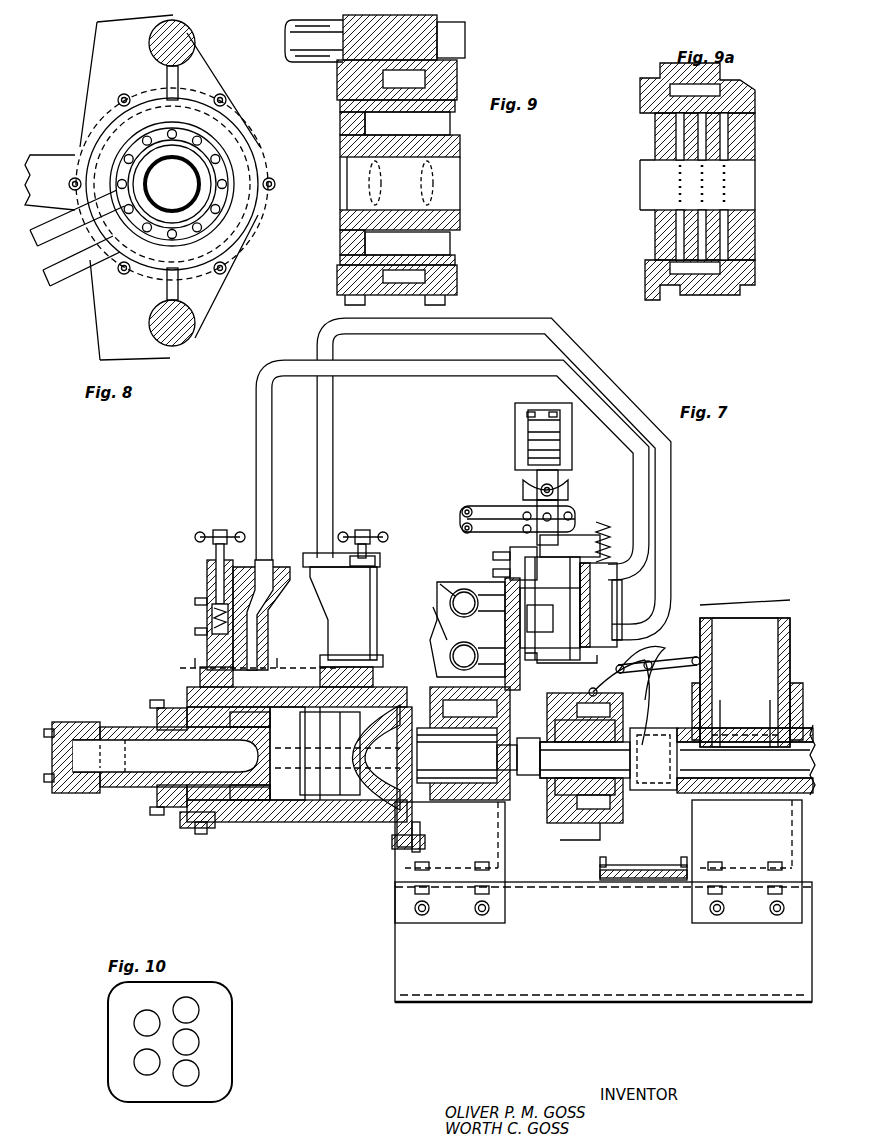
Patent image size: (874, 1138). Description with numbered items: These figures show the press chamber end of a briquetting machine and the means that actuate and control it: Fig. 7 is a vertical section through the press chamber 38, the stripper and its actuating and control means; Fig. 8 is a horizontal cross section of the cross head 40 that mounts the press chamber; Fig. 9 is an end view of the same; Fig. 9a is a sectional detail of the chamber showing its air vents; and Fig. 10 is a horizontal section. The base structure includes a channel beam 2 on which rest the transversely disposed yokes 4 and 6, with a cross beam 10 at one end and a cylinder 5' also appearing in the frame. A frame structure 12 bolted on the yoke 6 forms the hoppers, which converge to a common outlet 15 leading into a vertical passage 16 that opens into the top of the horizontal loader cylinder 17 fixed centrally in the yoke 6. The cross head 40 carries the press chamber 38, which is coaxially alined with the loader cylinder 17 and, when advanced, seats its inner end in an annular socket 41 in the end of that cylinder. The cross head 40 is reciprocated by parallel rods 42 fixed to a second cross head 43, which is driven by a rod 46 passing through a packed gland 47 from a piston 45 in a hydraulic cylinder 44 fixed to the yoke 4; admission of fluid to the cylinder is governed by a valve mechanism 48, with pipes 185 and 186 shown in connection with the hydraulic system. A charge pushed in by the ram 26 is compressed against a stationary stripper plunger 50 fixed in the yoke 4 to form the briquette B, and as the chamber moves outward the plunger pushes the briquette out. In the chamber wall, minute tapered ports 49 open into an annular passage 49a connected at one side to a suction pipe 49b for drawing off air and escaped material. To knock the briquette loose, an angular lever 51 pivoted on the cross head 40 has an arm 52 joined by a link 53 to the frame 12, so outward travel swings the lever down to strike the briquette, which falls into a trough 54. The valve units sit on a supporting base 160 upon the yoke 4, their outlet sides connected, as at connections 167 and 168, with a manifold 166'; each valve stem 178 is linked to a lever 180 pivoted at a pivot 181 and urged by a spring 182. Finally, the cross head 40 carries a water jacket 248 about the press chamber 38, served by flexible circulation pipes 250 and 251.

In FIG. 7, the channel beam 2 is at (398, 945).
In FIG. 7, the yoke 4 is at (438, 818).
In FIG. 7, the cylinder 5' is at (521, 451).
In FIG. 7, the yoke 6 is at (707, 847).
In FIG. 7, the cross beam 10 is at (244, 667).
In FIG. 7, the frame structure 12 is at (766, 705).
In FIG. 7, the outlet 15 is at (738, 688).
In FIG. 7, the vertical passage 16 is at (789, 683).
In FIG. 7, the loader cylinder 17 is at (703, 800).
In FIG. 7, the ram 26 is at (783, 800).
In FIG. 8, the press chamber 38 is at (206, 176).
In FIG. 9, the press chamber 38 is at (432, 148).
In FIG. 9A, the press chamber 38 is at (740, 215).
In FIG. 7, the press chamber 38 is at (585, 800).
In FIG. 8, the cross head 40 is at (212, 85).
In FIG. 9, the cross head 40 is at (430, 86).
In FIG. 7, the cross head 40 is at (602, 803).
In FIG. 7, the annular socket 41 is at (672, 797).
In FIG. 8, the rod 42 is at (186, 43).
In FIG. 9, the rod 42 is at (312, 66).
In FIG. 7, the cross head 43 is at (58, 794).
In FIG. 7, the hydraulic cylinder 44 is at (306, 822).
In FIG. 7, the piston 45 is at (270, 823).
In FIG. 7, the rod 46 is at (137, 790).
In FIG. 7, the packed gland 47 is at (200, 830).
In FIG. 7, the valve mechanism 48 is at (575, 600).
In FIG. 9A, the port 49 is at (660, 230).
In FIG. 9A, the annular passage 49a is at (735, 98).
In FIG. 8, the suction pipe 49b is at (48, 152).
In FIG. 7, the stripper plunger 50 is at (575, 793).
In FIG. 7, the angular lever 51 is at (652, 705).
In FIG. 7, the arm 52 is at (592, 688).
In FIG. 7, the link 53 is at (673, 650).
In FIG. 7, the trough 54 is at (633, 878).
In FIG. 7, the supporting base 160 is at (445, 672).
In FIG. 7, the manifold 166' is at (424, 617).
In FIG. 7, the connection 167 is at (486, 597).
In FIG. 7, the connection 168 is at (490, 657).
In FIG. 7, the valve stem 178 is at (582, 520).
In FIG. 7, the lever 180 is at (500, 507).
In FIG. 7, the pivot 181 is at (464, 507).
In FIG. 7, the spring 182 is at (612, 551).
In FIG. 7, the pipe 185 is at (273, 497).
In FIG. 7, the pipe 186 is at (336, 477).
In FIG. 9, the water jacket 248 is at (430, 125).
In FIG. 7, the water jacket 248 is at (597, 795).
In FIG. 8, the flexible circulation pipe 250 is at (77, 212).
In FIG. 8, the flexible circulation pipe 251 is at (81, 277).
In FIG. 9, the briquette B is at (440, 190).